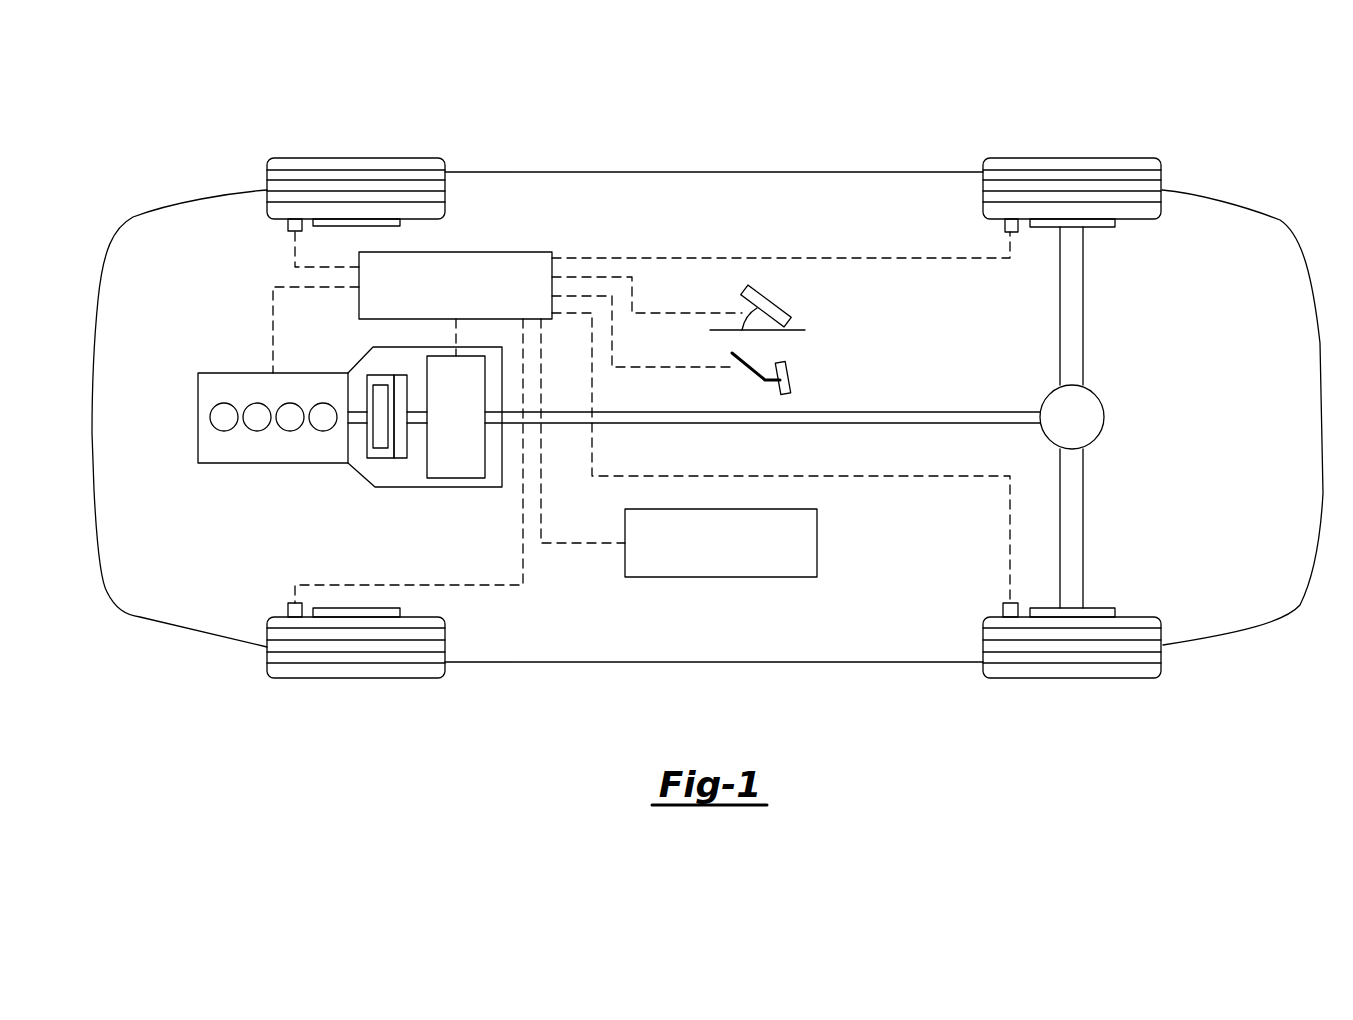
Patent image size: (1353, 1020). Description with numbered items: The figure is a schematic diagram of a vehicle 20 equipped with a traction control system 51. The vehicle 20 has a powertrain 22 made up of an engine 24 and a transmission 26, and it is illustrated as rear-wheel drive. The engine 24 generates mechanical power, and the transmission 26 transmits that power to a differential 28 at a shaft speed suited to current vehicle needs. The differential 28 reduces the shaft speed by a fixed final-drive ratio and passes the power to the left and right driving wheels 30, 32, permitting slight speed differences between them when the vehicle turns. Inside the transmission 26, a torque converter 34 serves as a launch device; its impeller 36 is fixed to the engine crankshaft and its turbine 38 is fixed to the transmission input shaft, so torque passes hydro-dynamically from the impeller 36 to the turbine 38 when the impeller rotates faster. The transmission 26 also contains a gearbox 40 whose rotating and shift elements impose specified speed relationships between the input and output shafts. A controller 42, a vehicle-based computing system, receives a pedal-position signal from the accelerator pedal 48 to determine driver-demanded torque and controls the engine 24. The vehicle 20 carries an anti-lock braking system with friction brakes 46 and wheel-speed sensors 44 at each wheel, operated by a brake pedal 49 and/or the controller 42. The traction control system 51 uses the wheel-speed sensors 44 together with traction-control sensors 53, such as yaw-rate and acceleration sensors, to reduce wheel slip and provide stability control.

The vehicle 20 is at (748, 85).
The powertrain 22 is at (328, 490).
The engine 24 is at (225, 373).
The transmission 26 is at (493, 487).
The differential 28 is at (1105, 415).
The left driving wheel 30 is at (1072, 158).
The right driving wheel 32 is at (1072, 677).
The torque converter 34 is at (380, 458).
The impeller 36 is at (403, 458).
The turbine 38 is at (380, 385).
The gearbox 40 is at (454, 478).
The controller 42 is at (458, 252).
The wheel-speed sensors 44 is at (288, 225).
The friction brakes 46 is at (357, 226).
The accelerator pedal 48 is at (772, 303).
The brake pedal 49 is at (788, 373).
The traction control system 51 is at (680, 578).
The traction-control sensors 53 is at (720, 577).